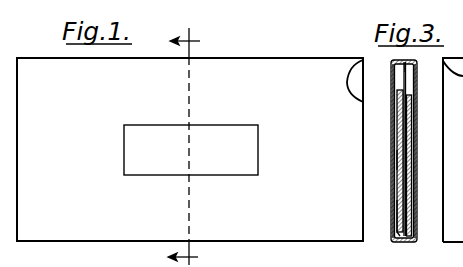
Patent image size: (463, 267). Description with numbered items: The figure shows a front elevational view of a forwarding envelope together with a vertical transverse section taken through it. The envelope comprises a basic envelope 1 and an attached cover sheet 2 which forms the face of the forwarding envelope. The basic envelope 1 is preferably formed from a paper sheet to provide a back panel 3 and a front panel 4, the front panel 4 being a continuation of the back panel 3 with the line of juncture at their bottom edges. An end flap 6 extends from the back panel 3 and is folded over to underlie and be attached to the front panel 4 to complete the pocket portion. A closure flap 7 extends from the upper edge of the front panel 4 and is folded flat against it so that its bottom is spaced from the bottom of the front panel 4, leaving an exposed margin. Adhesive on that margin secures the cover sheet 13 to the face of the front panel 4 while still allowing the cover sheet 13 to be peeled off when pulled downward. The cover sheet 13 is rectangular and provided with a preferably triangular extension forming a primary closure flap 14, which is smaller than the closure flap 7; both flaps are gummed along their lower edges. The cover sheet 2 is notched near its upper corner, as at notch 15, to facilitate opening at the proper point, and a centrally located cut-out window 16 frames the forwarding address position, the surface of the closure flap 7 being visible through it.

In FIG. 3, the basic envelope 1 is at (414, 203).
In FIG. 1, the cover sheet 2 is at (353, 162).
In FIG. 3, the cover sheet 2 is at (395, 207).
In FIG. 1, the back panel 3 is at (184, 137).
In FIG. 3, the back panel 3 is at (410, 146).
In FIG. 3, the front panel 4 is at (406, 180).
In FIG. 3, the end flap 6 is at (409, 118).
In FIG. 3, the closure flap 7 is at (394, 139).
In FIG. 1, the cover sheet 13 is at (273, 228).
In FIG. 3, the cover sheet 13 is at (391, 100).
In FIG. 3, the primary closure flap 14 is at (415, 79).
In FIG. 1, the notch 15 is at (350, 70).
In FIG. 1, the cut-out window 16 is at (258, 149).
In FIG. 3, the cut-out window 16 is at (397, 166).